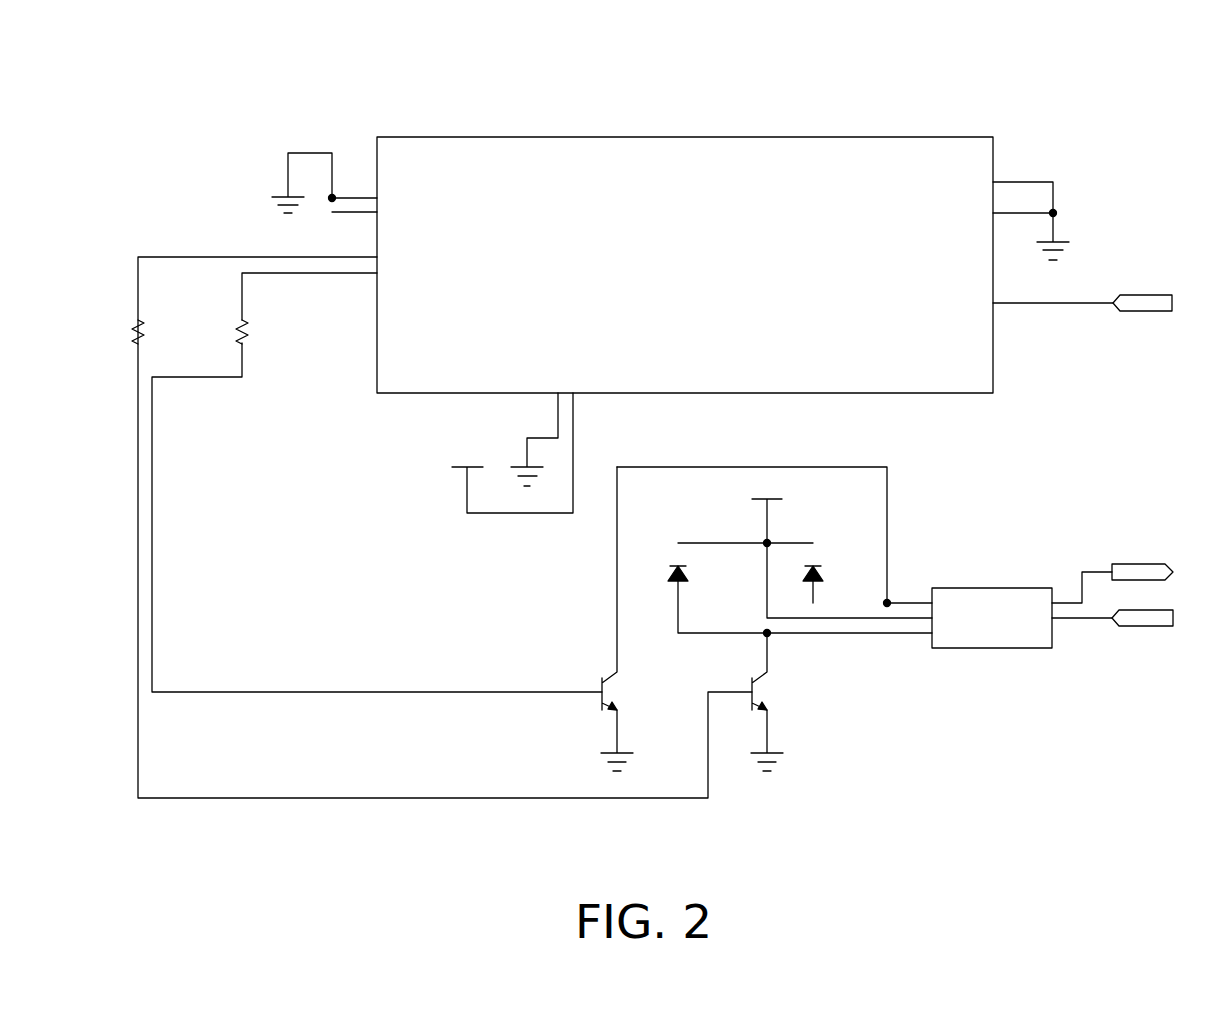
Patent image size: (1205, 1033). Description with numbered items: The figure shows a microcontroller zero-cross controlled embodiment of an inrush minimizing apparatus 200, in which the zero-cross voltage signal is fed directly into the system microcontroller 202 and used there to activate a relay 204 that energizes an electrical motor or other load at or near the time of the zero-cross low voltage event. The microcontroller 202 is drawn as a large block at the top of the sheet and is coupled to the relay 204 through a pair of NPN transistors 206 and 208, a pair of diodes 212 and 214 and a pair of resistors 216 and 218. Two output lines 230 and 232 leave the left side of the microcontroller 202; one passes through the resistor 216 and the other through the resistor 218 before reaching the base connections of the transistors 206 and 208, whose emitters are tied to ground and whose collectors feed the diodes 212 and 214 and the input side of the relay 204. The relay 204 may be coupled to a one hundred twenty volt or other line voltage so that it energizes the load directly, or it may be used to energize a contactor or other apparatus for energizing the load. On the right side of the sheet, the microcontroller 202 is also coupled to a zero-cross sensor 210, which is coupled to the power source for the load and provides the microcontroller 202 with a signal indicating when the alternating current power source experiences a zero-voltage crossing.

The inrush minimizing apparatus 200 is at (1075, 90).
The microcontroller 202 is at (703, 213).
The relay 204 is at (995, 649).
The NPN transistor 206 is at (601, 680).
The NPN transistor 208 is at (751, 680).
The zero-cross sensor 210 is at (1140, 312).
The diode 212 is at (669, 566).
The diode 214 is at (816, 563).
The resistor 216 is at (136, 323).
The resistor 218 is at (246, 338).
The first control line 230 is at (377, 257).
The second control line 232 is at (377, 273).